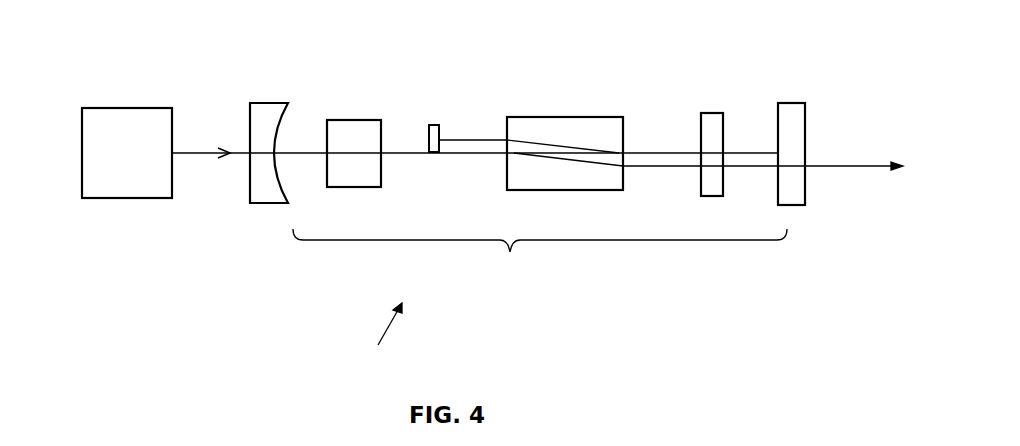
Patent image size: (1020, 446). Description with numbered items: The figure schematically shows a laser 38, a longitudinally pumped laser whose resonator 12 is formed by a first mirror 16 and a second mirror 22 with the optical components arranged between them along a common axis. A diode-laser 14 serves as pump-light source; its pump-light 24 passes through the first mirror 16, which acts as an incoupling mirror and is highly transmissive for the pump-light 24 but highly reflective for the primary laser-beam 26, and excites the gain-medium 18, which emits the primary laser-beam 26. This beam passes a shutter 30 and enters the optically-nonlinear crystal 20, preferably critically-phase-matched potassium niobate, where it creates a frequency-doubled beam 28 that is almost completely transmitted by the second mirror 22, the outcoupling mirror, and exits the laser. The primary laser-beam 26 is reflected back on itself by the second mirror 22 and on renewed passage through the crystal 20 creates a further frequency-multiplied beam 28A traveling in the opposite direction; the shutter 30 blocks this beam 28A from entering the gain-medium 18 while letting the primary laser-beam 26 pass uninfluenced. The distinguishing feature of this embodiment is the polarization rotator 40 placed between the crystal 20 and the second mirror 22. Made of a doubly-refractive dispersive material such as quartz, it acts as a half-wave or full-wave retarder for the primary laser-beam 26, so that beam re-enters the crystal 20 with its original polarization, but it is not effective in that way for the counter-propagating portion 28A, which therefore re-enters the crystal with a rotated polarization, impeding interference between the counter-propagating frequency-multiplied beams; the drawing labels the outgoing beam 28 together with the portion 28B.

The resonator 12 is at (535, 240).
The diode-laser 14 is at (125, 108).
The first mirror 16 is at (262, 103).
The gain-medium 18 is at (357, 120).
The optically-nonlinear crystal 20 is at (547, 117).
The second mirror 22 is at (792, 103).
The pump-light 24 is at (190, 148).
The primary laser-beam 26 is at (655, 152).
The frequency-doubled beam 28 is at (848, 167).
The further frequency-multiplied beam 28A is at (475, 140).
The second beam component 28B is at (756, 168).
The shutter 30 is at (434, 125).
The laser 38 is at (372, 333).
The polarization rotator 40 is at (708, 113).